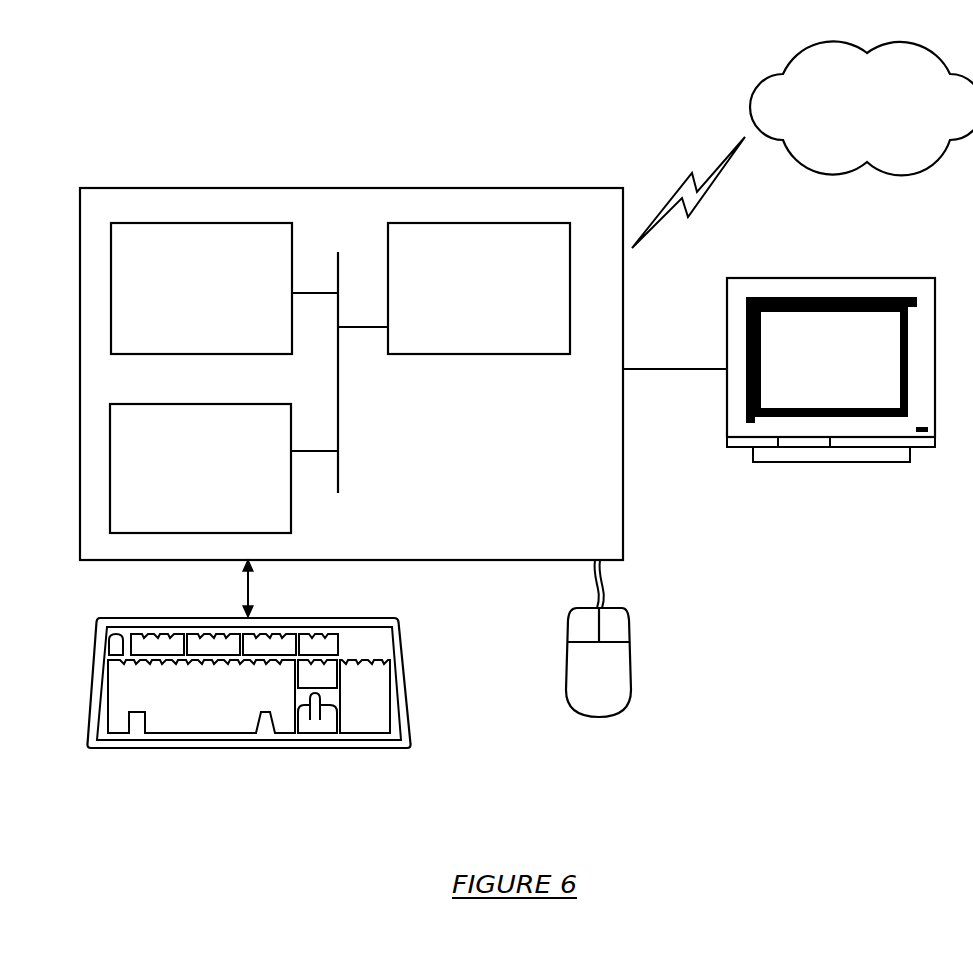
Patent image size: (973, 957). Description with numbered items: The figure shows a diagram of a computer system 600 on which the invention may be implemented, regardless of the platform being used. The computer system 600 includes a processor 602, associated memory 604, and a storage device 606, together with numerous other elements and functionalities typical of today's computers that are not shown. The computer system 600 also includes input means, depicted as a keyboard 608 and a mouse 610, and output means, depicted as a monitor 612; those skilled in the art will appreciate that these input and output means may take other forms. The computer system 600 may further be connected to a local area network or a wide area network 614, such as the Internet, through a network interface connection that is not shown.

The computer system 600 is at (132, 182).
The processor 602 is at (511, 300).
The memory 604 is at (218, 300).
The storage device 606 is at (217, 478).
The keyboard 608 is at (212, 713).
The mouse 610 is at (616, 679).
The monitor 612 is at (847, 366).
The wide area network 614 is at (894, 129).